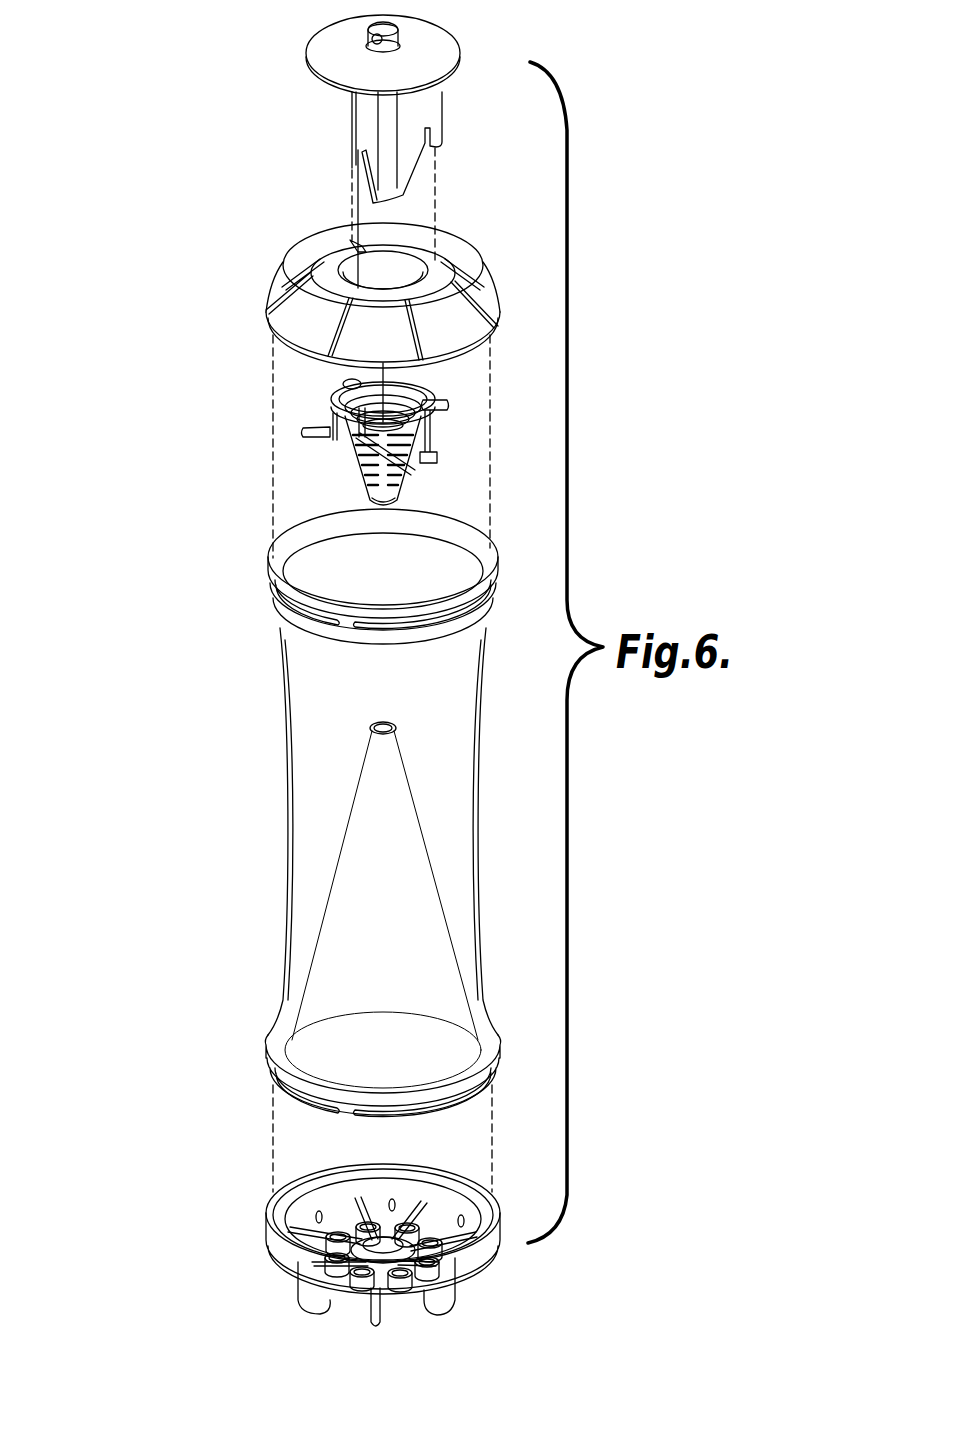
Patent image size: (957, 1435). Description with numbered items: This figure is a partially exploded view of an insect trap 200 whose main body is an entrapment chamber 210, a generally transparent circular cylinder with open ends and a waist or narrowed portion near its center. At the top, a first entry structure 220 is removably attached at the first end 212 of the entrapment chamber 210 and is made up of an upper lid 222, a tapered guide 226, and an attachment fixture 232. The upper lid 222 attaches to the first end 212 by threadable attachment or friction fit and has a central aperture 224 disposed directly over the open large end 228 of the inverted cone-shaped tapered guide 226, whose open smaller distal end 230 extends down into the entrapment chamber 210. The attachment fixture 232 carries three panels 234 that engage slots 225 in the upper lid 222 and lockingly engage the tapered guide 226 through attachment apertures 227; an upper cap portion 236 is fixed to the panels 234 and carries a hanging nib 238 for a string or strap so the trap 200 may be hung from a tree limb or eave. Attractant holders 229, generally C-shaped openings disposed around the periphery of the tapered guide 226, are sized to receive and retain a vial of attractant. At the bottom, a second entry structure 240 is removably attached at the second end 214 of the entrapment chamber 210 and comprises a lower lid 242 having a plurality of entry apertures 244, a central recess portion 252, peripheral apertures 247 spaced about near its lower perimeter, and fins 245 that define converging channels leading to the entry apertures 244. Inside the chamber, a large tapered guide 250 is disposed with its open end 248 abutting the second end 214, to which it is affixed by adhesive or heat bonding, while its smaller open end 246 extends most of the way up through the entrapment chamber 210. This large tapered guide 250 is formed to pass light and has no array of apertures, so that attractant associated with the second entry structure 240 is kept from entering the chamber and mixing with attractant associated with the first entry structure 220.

The insect trap 200 is at (176, 685).
The entrapment chamber 210 is at (286, 853).
The first end 212 is at (277, 582).
The second end 214 is at (300, 1090).
The first entry structure 220 is at (266, 229).
The upper lid 222 is at (272, 272).
The central aperture 224 is at (368, 272).
The slots 225 is at (355, 243).
The tapered guide 226 is at (350, 468).
The attachment apertures 227 is at (355, 384).
The open large end 228 is at (335, 398).
The attractant holders 229 is at (300, 432).
The open smaller distal end 230 is at (375, 503).
The attachment fixture 232 is at (462, 34).
The panels 234 is at (427, 108).
The upper cap portion 236 is at (330, 63).
The hanging nib 238 is at (378, 30).
The second entry structure 240 is at (254, 1256).
The lower lid 242 is at (275, 1228).
The entry apertures 244 is at (340, 1237).
The fins 245 is at (310, 1302).
The smaller open end 246 is at (383, 723).
The peripheral apertures 247 is at (358, 1198).
The open end 248 is at (460, 1100).
The large tapered guide 250 is at (323, 933).
The central recess portion 252 is at (440, 1255).